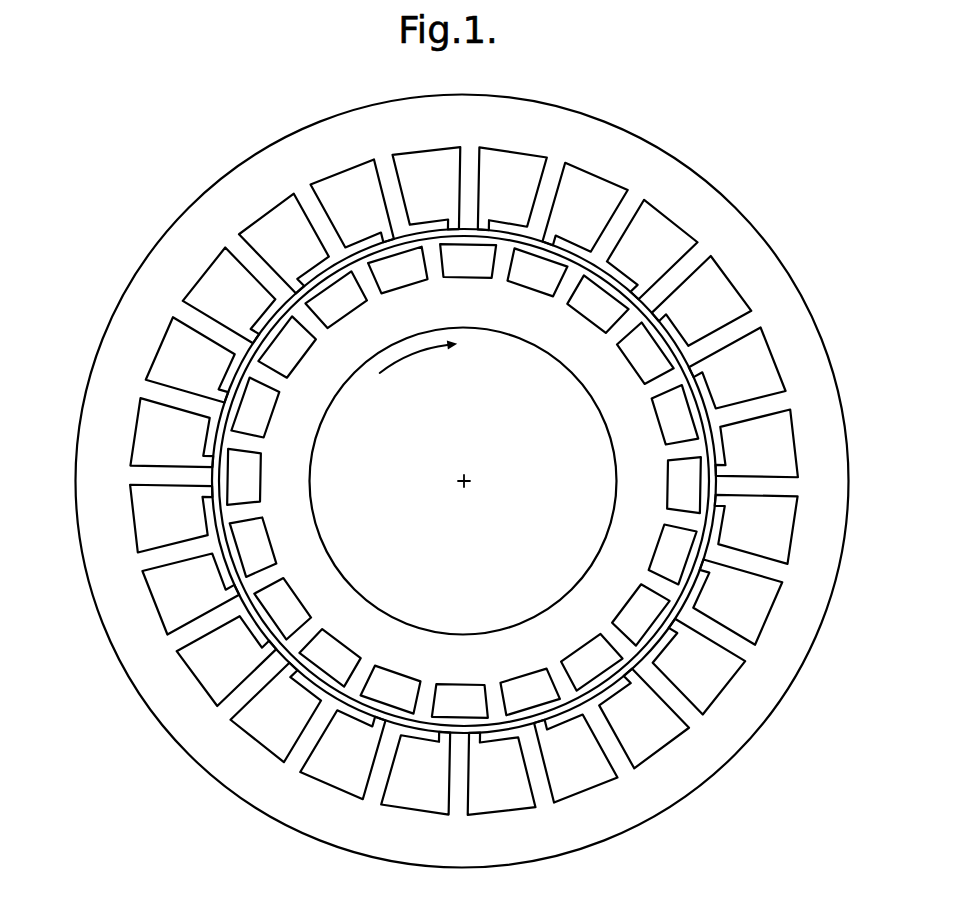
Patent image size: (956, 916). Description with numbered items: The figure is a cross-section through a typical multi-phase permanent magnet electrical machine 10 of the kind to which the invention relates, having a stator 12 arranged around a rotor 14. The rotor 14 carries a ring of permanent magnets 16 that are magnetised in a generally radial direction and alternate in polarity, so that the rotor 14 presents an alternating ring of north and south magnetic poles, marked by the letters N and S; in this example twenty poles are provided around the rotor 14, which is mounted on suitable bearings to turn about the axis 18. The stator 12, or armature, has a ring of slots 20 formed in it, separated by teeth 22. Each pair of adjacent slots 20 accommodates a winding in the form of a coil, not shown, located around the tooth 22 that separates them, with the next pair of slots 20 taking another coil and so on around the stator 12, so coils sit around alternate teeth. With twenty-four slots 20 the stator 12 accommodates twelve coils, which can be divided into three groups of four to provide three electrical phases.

The permanent magnet electrical machine 10 is at (218, 153).
The stator 12 is at (237, 777).
The rotor 14 is at (397, 534).
The permanent magnets 16 is at (260, 417).
The axis 18 is at (466, 482).
The slots 20 is at (423, 162).
The teeth 22 is at (247, 260).